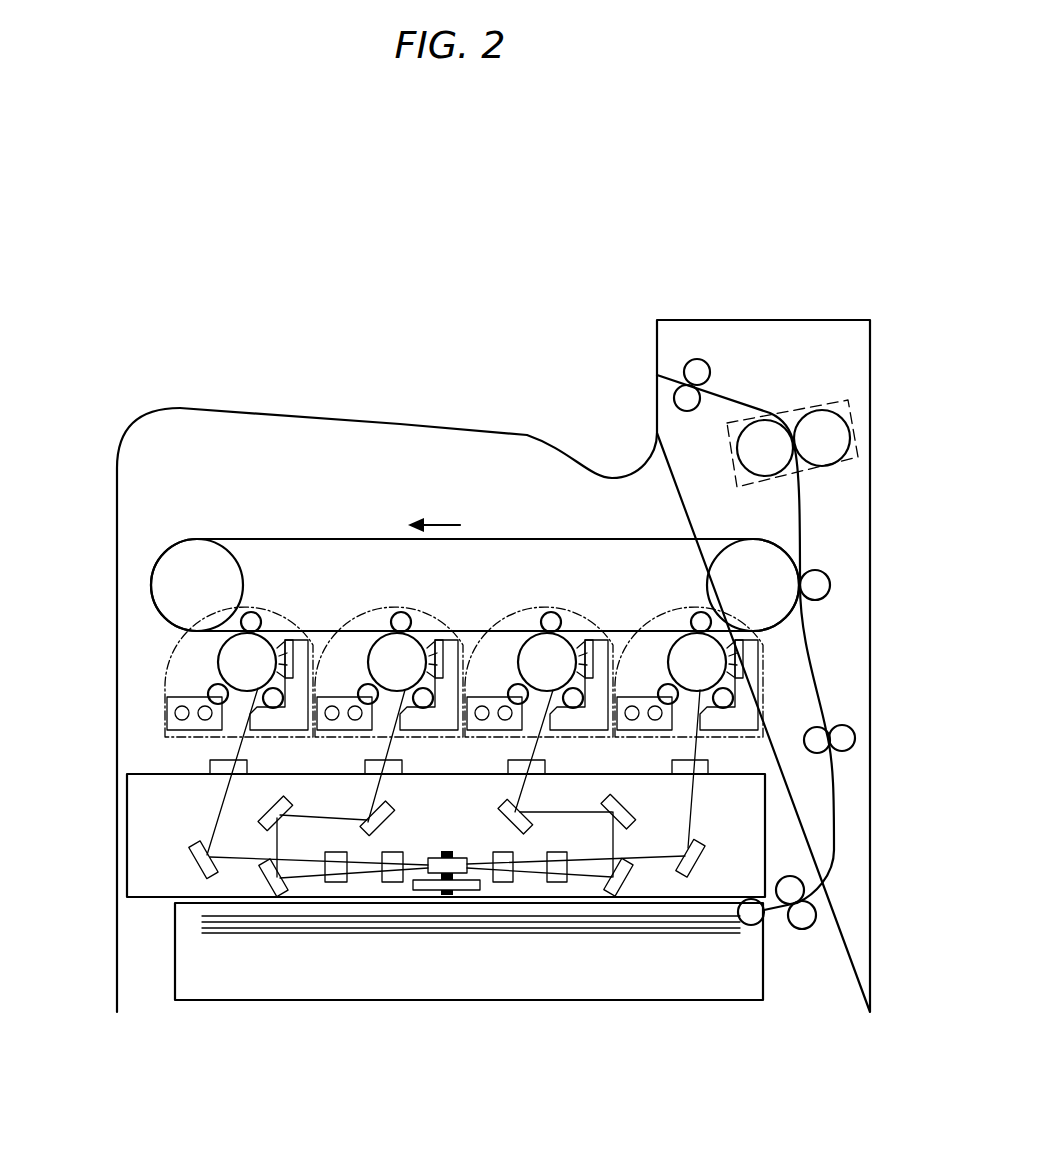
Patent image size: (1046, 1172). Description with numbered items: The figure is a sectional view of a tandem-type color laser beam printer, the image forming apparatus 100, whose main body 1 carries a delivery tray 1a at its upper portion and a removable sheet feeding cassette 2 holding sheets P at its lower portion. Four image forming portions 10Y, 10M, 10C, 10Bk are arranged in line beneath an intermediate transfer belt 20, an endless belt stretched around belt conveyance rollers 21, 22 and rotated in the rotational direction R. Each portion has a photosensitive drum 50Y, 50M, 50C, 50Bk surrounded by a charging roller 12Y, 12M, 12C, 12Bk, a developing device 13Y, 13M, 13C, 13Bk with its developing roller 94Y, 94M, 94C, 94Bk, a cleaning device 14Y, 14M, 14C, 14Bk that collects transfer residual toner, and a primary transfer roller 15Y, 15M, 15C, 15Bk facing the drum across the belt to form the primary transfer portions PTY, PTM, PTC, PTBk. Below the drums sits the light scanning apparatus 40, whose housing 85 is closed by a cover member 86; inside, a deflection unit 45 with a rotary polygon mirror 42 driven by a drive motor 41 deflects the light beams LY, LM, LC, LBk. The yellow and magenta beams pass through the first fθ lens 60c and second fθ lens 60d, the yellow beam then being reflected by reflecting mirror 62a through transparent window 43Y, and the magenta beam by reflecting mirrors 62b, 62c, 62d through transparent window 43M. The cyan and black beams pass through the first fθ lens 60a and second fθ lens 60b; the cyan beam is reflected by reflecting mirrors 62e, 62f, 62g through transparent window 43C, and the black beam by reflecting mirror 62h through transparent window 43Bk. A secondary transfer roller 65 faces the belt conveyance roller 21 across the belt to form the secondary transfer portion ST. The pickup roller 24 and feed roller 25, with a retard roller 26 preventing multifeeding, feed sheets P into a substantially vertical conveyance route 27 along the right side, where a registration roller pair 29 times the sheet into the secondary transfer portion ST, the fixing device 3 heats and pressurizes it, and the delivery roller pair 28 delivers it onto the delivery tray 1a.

The image forming apparatus 100 is at (817, 296).
The main body 1 is at (140, 638).
The delivery tray 1a is at (512, 432).
The sheet feeding cassette 2 is at (770, 989).
The fixing device 3 is at (858, 428).
The yellow image forming portion 10Y is at (286, 613).
The magenta image forming portion 10M is at (437, 614).
The cyan image forming portion 10C is at (587, 613).
The black image forming portion 10Bk is at (764, 742).
The charging roller 12Y is at (268, 706).
The charging roller 12M is at (420, 706).
The charging roller 12C is at (570, 706).
The charging roller 12Bk is at (720, 706).
The developing device 13Y is at (172, 700).
The developing device 13M is at (323, 696).
The developing device 13C is at (473, 696).
The developing device 13Bk is at (622, 696).
The cleaning device 14Y is at (300, 640).
The cleaning device 14M is at (450, 640).
The cleaning device 14C is at (598, 640).
The cleaning device 14Bk is at (752, 648).
The primary transfer roller 15Y is at (252, 611).
The primary transfer roller 15M is at (402, 611).
The primary transfer roller 15C is at (552, 611).
The primary transfer roller 15Bk is at (702, 611).
The intermediate transfer belt 20 is at (288, 539).
The belt conveyance roller 21 is at (785, 570).
The belt conveyance roller 22 is at (170, 565).
The pickup roller 24 is at (751, 920).
The feed roller 25 is at (800, 887).
The retard roller 26 is at (808, 920).
The conveyance route 27 is at (802, 520).
The delivery roller pair 28 is at (698, 359).
The registration roller pair 29 is at (851, 732).
The light scanning apparatus 40 is at (770, 848).
The drive motor 41 is at (428, 889).
The rotary polygon mirror 42 is at (432, 856).
The transparent window 43Y is at (210, 763).
The transparent window 43M is at (365, 763).
The transparent window 43C is at (508, 763).
The transparent window 43Bk is at (672, 763).
The deflection unit 45 is at (484, 888).
The photosensitive drum 50Y is at (245, 668).
The photosensitive drum 50M is at (385, 645).
The photosensitive drum 50C is at (537, 645).
The photosensitive drum 50Bk is at (688, 652).
The first fθ lens 60a is at (495, 852).
The second fθ lens 60b is at (555, 852).
The first fθ lens 60c is at (395, 852).
The second fθ lens 60d is at (338, 852).
The reflecting mirror 62a is at (190, 852).
The reflecting mirror 62b is at (258, 872).
The reflecting mirror 62c is at (270, 804).
The reflecting mirror 62d is at (368, 805).
The reflecting mirror 62e is at (633, 877).
The reflecting mirror 62f is at (630, 806).
The reflecting mirror 62g is at (530, 812).
The reflecting mirror 62h is at (705, 858).
The secondary transfer roller 65 is at (826, 592).
The housing 85 is at (127, 852).
The cover member 86 is at (127, 778).
The developing roller 94Y is at (212, 688).
The developing roller 94M is at (363, 685).
The developing roller 94C is at (514, 685).
The developing roller 94Bk is at (662, 685).
The light beam LY is at (220, 805).
The light beam LM is at (380, 790).
The light beam LC is at (522, 790).
The light beam LBk is at (700, 812).
The primary transfer portion PTY is at (258, 615).
The primary transfer portion PTM is at (407, 614).
The primary transfer portion PTC is at (557, 614).
The primary transfer portion PTBk is at (705, 614).
The secondary transfer portion ST is at (826, 598).
The rotational direction R is at (440, 525).
The sheet P is at (577, 937).